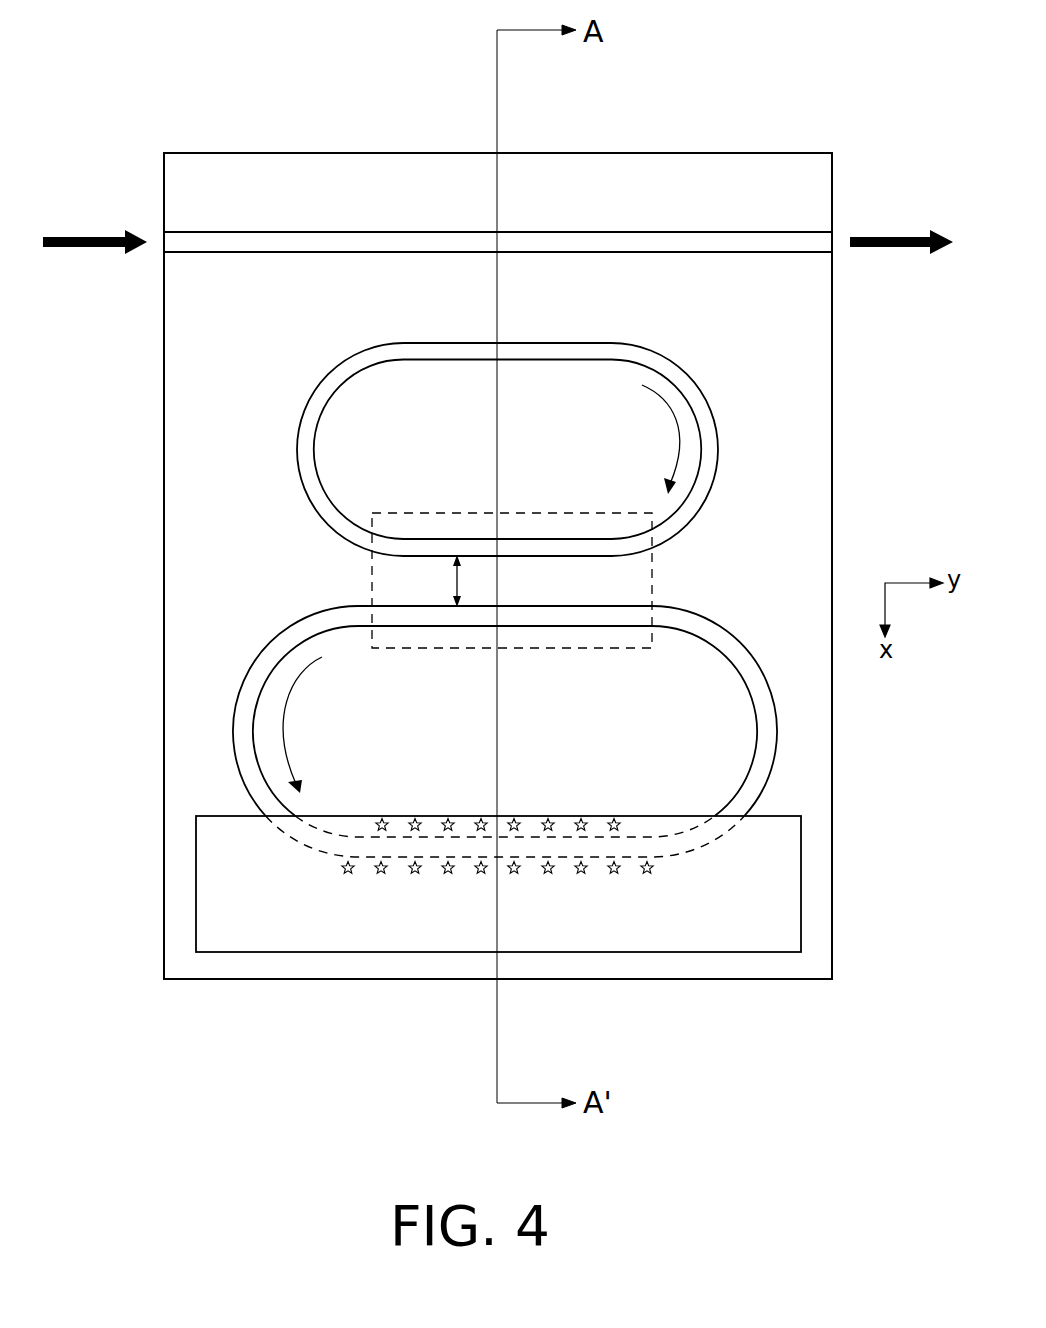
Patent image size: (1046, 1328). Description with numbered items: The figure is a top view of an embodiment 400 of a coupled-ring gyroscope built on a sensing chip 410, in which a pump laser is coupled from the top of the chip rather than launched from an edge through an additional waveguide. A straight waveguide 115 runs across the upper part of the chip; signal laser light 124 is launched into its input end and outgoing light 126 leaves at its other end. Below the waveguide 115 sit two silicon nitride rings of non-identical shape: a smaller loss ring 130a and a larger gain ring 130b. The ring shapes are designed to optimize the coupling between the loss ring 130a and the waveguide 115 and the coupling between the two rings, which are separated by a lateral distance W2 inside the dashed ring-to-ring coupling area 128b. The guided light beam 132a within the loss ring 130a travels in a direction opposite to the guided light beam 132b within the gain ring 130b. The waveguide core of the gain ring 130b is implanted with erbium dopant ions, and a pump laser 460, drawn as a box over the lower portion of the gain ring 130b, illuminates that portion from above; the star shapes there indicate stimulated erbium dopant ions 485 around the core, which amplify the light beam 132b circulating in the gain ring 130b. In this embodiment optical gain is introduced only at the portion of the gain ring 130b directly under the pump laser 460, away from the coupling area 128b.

The embodiment 400 is at (830, 49).
The sensing chip 410 is at (682, 151).
The waveguide 115 is at (273, 231).
The input optical signal 124 is at (82, 250).
The output optical signal 126 is at (890, 250).
The loss ring 130a is at (683, 530).
The gain ring 130b is at (318, 612).
The guided light beam 132a is at (677, 428).
The guided light beam 132b is at (278, 737).
The dashed area 128b is at (535, 513).
The lateral distance W2 is at (434, 581).
The pump laser 460 is at (675, 815).
The erbium dopant ions 485 is at (647, 878).